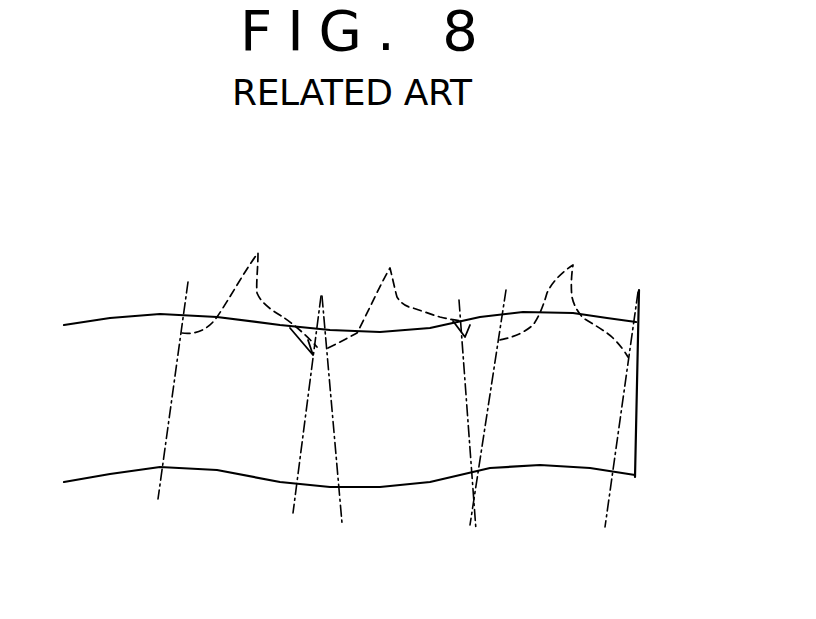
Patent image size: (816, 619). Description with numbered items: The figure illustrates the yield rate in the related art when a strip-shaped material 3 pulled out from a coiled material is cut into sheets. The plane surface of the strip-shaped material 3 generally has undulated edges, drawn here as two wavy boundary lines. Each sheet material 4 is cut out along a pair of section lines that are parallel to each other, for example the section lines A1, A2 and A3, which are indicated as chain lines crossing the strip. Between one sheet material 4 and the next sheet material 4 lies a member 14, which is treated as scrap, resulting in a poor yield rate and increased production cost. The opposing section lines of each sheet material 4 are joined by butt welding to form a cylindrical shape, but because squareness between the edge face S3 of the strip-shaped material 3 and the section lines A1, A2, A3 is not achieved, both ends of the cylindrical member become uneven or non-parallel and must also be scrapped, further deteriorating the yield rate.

The strip-shaped material 3 is at (132, 318).
The sheet material 4 is at (235, 462).
The member 14 is at (480, 330).
The section line A1 is at (564, 294).
The section line A2 is at (395, 291).
The section line A3 is at (249, 284).
The edge face S3 is at (610, 320).